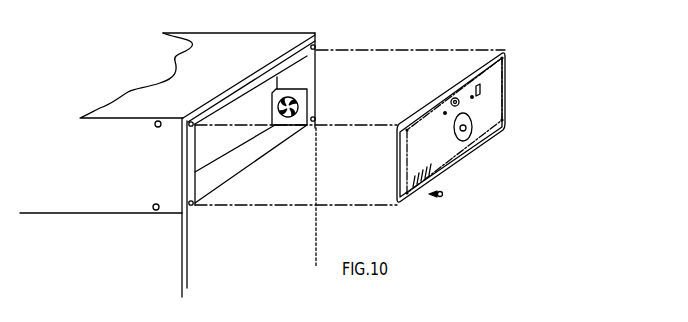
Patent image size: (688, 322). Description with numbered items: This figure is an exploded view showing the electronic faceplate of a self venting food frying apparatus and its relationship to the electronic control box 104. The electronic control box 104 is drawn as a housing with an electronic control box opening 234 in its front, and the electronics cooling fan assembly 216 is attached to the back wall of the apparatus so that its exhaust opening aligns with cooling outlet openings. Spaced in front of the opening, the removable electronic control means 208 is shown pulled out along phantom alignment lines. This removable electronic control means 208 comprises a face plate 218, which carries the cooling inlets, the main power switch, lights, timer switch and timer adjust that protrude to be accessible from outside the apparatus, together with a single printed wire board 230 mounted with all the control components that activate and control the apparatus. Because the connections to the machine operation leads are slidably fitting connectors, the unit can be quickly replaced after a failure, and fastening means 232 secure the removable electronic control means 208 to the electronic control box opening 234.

The electronic control box 104 is at (203, 137).
The removable electronic control means 208 is at (498, 52).
The electronics cooling fan assembly 216 is at (303, 106).
The face plate 218 is at (448, 140).
The printed wire board 230 is at (503, 107).
The fastening means 232 is at (443, 194).
The electronic control box opening 234 is at (247, 92).